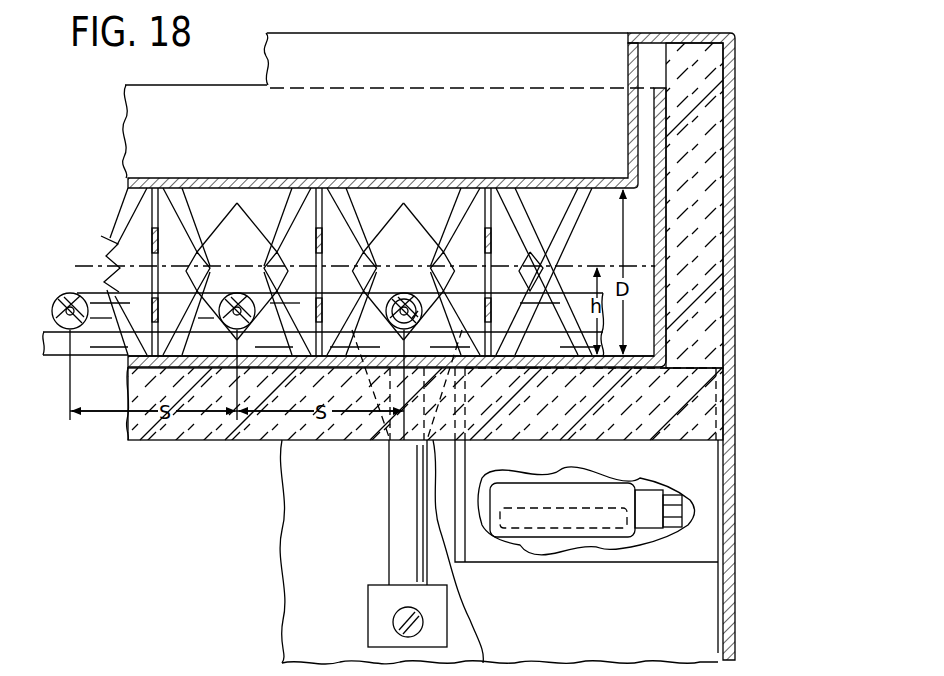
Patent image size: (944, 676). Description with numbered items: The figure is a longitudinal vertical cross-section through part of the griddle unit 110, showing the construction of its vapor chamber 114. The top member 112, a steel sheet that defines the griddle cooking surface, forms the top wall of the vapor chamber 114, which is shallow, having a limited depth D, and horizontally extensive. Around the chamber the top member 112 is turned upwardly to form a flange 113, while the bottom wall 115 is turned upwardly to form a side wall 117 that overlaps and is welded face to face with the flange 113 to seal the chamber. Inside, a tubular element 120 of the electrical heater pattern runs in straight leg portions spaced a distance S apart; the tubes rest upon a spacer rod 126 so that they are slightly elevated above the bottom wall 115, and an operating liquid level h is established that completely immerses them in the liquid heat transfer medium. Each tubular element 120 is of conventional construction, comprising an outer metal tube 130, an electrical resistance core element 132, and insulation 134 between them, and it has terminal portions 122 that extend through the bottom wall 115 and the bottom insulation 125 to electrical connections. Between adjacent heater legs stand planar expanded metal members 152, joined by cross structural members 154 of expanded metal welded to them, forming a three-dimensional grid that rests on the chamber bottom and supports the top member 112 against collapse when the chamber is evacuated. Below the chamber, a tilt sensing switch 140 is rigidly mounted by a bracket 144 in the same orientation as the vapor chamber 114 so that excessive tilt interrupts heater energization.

The griddle unit 110 is at (778, 353).
The top member 112 is at (425, 182).
The flange 113 is at (662, 84).
The vapor chamber 114 is at (590, 251).
The bottom wall 115 is at (600, 377).
The side wall 117 is at (665, 218).
The tubular element 120 is at (61, 298).
The terminal portions 122 is at (396, 497).
The bottom insulation 125 is at (553, 412).
The spacer rod 126 is at (55, 347).
The outer metal tube 130 is at (398, 294).
The electrical resistance core element 132 is at (418, 311).
The insulation 134 is at (401, 305).
The tilt sensing switch 140 is at (550, 515).
The bracket 144 is at (462, 477).
The expanded metal members 152 is at (152, 238).
The cross structural members 154 is at (222, 210).